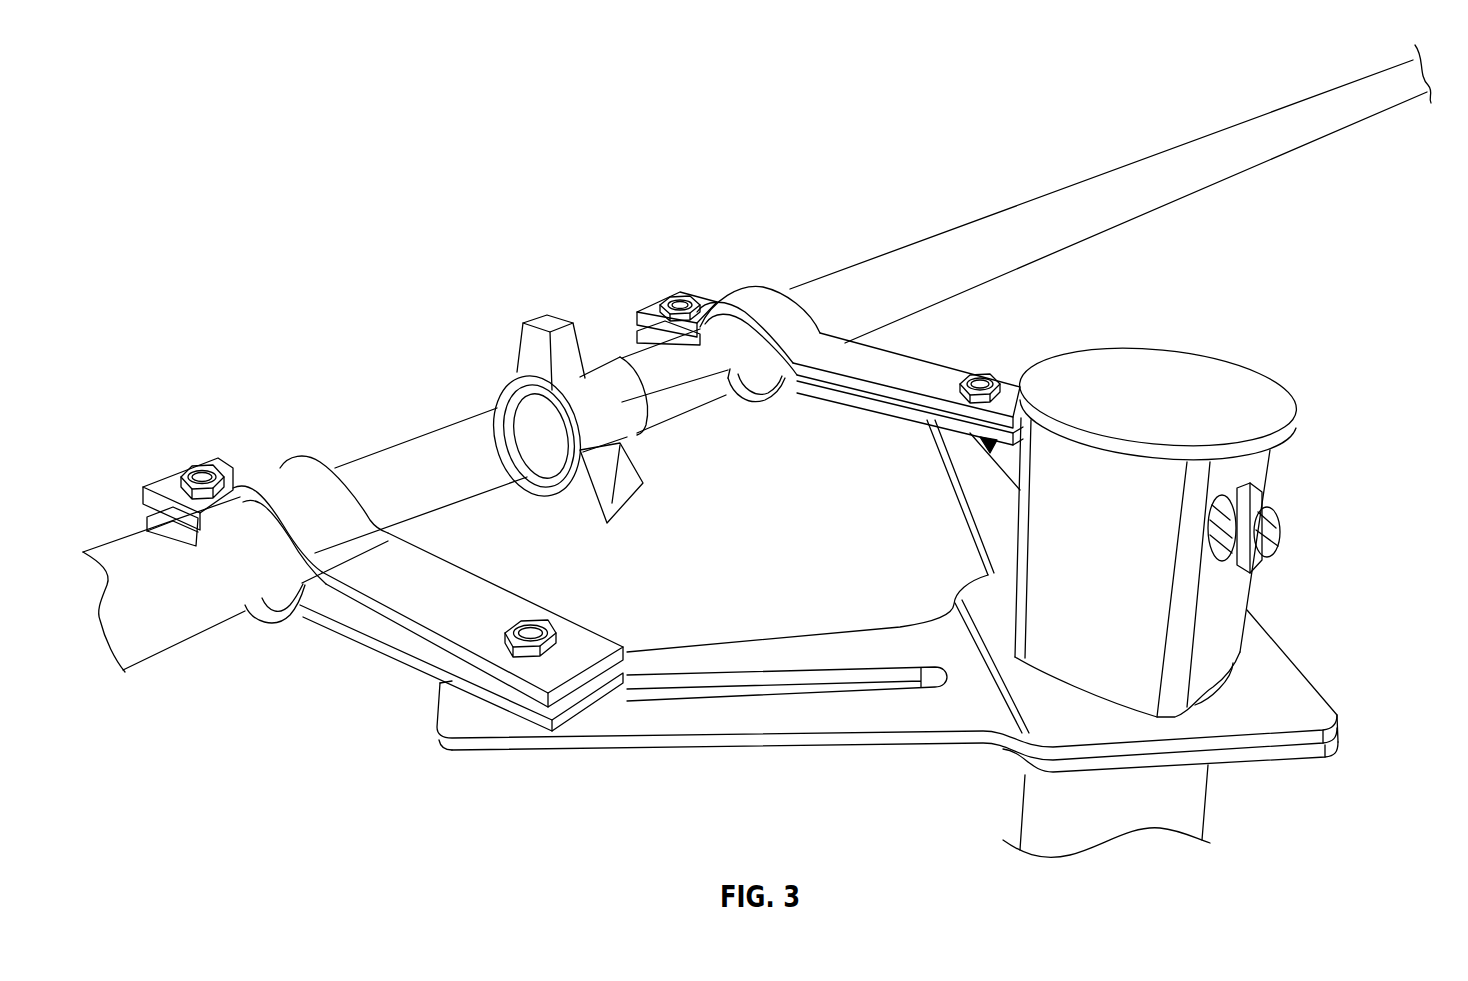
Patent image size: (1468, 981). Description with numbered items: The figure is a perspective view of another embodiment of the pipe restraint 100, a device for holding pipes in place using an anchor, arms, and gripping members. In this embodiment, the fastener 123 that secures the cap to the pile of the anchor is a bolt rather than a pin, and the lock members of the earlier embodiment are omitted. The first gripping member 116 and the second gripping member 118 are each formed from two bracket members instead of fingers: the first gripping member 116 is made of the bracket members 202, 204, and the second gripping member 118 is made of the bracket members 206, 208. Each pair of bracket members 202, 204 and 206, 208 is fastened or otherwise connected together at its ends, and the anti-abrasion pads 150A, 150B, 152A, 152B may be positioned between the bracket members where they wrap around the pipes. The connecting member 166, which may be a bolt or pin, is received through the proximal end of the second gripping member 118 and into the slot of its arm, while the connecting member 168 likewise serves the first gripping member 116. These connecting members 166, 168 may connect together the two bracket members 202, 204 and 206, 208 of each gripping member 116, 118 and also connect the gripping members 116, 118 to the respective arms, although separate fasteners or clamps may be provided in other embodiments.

The pipe restraint 100 is at (1362, 335).
The first gripping member 116 is at (980, 480).
The second gripping member 118 is at (725, 743).
The fastener 123 is at (1258, 484).
The anti-abrasion pad 150A is at (722, 303).
The anti-abrasion pad 150B is at (747, 402).
The anti-abrasion pad 152A is at (262, 613).
The anti-abrasion pad 152B is at (233, 488).
The connecting member 166 is at (528, 617).
The connecting member 168 is at (982, 369).
The bracket member 202 is at (903, 355).
The bracket member 204 is at (887, 407).
The bracket member 206 is at (488, 585).
The bracket member 208 is at (413, 660).